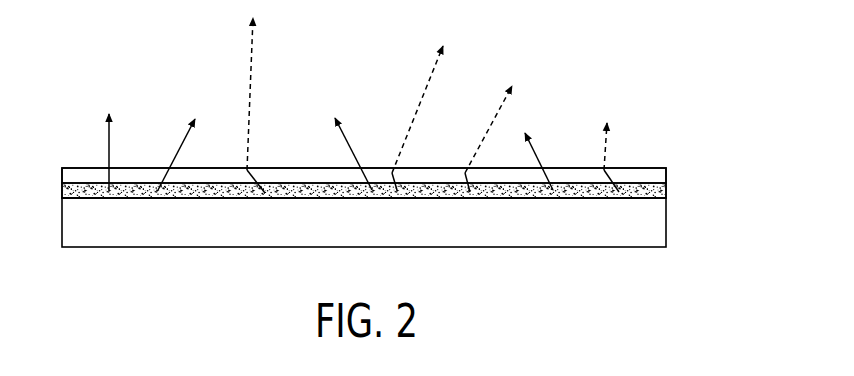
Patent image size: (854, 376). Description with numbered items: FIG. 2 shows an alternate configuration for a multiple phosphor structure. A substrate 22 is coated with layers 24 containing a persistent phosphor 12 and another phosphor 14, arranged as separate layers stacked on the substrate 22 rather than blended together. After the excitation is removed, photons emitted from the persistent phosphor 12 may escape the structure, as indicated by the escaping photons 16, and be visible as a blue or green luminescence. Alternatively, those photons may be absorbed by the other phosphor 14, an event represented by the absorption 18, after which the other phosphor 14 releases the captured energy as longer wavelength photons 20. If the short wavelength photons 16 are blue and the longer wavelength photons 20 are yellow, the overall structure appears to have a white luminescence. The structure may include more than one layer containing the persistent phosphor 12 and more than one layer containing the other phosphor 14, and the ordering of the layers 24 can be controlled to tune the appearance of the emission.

The persistent phosphor 12 is at (658, 190).
The another phosphor 14 is at (660, 175).
The escaping photons 16 is at (107, 145).
The absorption of emitted photons 18 is at (247, 170).
The longer wavelength photons 20 is at (249, 75).
The substrate 22 is at (658, 225).
The layers 24 is at (56, 168).